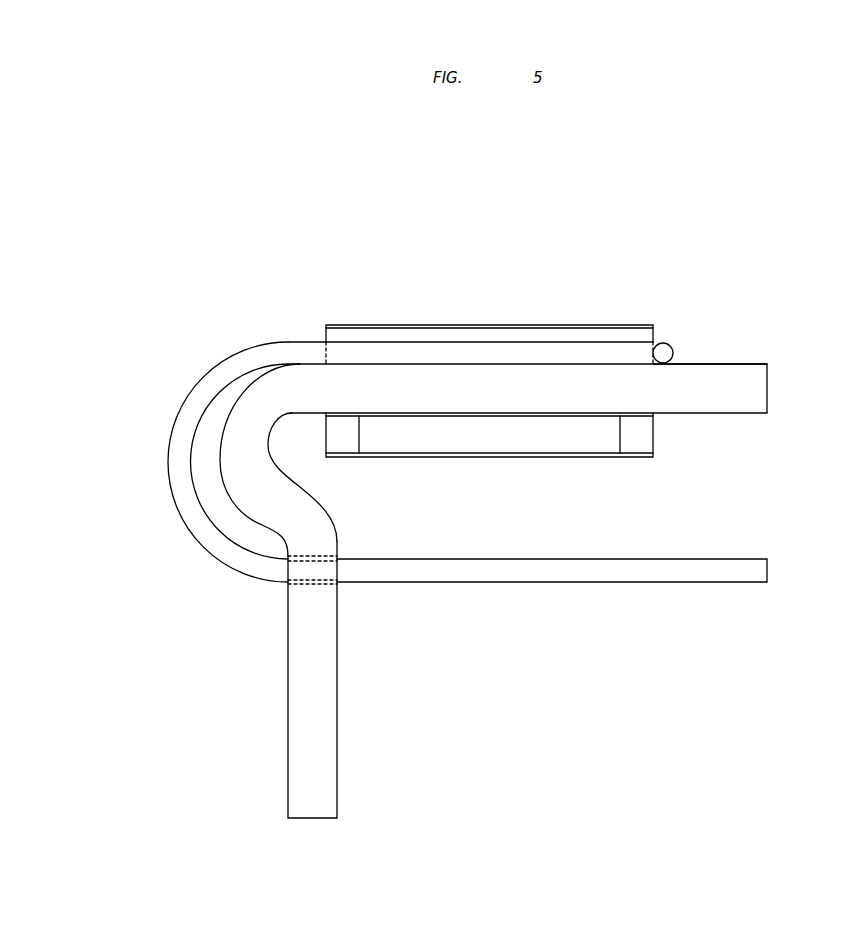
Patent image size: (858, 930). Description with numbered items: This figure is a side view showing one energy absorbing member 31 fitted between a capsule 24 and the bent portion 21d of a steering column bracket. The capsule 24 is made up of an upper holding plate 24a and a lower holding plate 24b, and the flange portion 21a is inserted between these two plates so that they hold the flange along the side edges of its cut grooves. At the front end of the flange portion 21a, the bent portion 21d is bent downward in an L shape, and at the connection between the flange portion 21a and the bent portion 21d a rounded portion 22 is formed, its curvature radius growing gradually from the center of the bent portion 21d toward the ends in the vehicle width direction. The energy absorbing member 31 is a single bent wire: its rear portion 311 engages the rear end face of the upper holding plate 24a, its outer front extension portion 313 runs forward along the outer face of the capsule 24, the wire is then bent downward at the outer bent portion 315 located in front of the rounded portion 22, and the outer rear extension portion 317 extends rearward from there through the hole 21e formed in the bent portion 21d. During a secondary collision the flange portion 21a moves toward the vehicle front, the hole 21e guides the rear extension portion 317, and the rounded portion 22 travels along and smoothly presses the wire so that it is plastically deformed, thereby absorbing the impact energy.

The energy absorbing member 31 is at (654, 622).
The rear portion 311 is at (672, 350).
The outer front extension portion 313 is at (404, 349).
The outer bent portion 315 is at (187, 433).
The outer rear extension portion 317 is at (535, 570).
The capsule 24 is at (530, 304).
The upper holding plate 24a is at (603, 328).
The lower holding plate 24b is at (537, 448).
The flange portion 21a is at (757, 393).
The bent portion 21d is at (312, 812).
The hole 21e is at (300, 585).
The rounded portion 22 is at (235, 442).